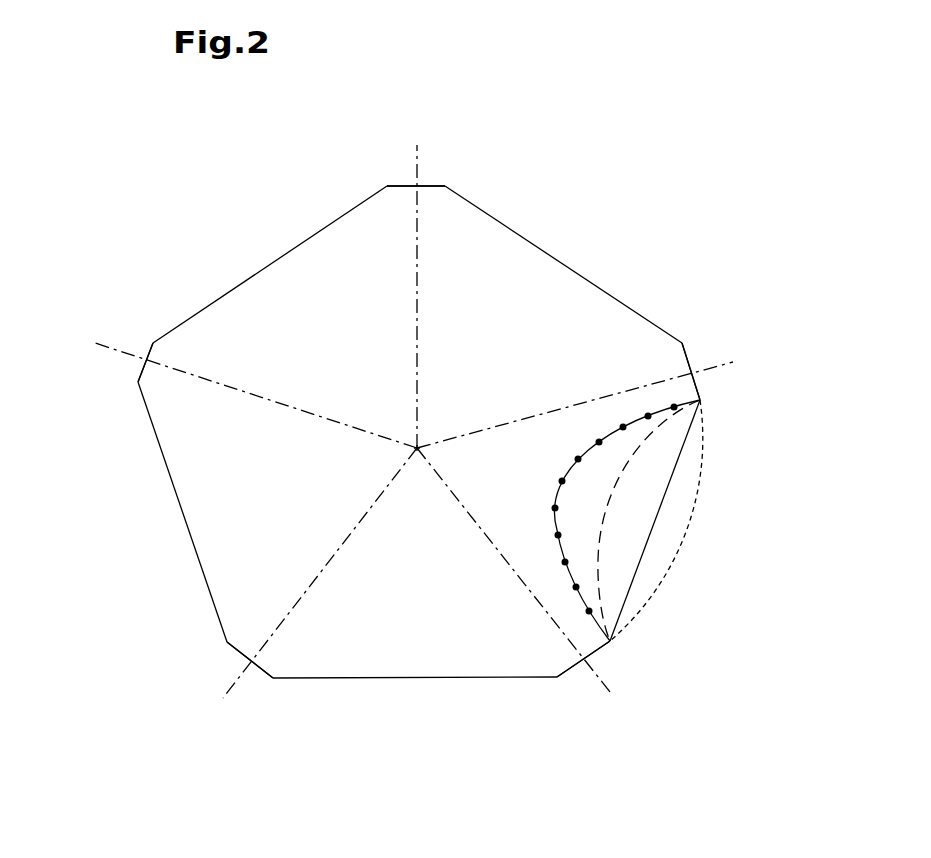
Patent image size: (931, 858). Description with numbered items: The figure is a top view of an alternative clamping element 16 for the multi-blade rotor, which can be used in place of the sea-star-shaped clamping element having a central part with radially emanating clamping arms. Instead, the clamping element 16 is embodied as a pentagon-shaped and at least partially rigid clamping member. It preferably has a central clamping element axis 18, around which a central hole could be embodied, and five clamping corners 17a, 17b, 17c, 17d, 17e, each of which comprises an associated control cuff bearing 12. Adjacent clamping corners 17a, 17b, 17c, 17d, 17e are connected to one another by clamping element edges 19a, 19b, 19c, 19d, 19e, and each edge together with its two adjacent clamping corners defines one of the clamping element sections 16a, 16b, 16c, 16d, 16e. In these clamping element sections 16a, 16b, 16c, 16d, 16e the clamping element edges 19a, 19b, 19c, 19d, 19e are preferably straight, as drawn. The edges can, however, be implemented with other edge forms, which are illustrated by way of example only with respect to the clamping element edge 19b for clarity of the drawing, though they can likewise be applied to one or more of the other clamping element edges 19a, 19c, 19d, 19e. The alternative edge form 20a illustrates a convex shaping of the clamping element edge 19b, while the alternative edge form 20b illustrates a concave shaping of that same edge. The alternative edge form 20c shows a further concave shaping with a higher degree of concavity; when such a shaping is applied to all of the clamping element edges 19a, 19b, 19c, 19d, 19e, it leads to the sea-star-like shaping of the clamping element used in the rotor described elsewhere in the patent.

The control cuff bearing 12 is at (398, 182).
The clamping element 16 is at (416, 442).
The clamping element section 16a is at (549, 296).
The clamping element section 16b is at (613, 501).
The clamping element section 16c is at (441, 622).
The clamping element section 16d is at (228, 540).
The clamping element section 16e is at (256, 299).
The clamping corner 17a is at (430, 182).
The clamping corner 17b is at (700, 383).
The clamping corner 17c is at (578, 677).
The clamping corner 17d is at (254, 680).
The clamping corner 17e is at (135, 368).
The central clamping element axis 18 is at (421, 446).
The clamping element edge 19a is at (590, 283).
The clamping element edge 19b is at (663, 497).
The clamping element edge 19c is at (421, 706).
The clamping element edge 19d is at (157, 442).
The clamping element edge 19e is at (240, 284).
The alternative edge form 20a is at (683, 553).
The alternative edge form 20b is at (657, 432).
The alternative edge form 20c is at (580, 588).